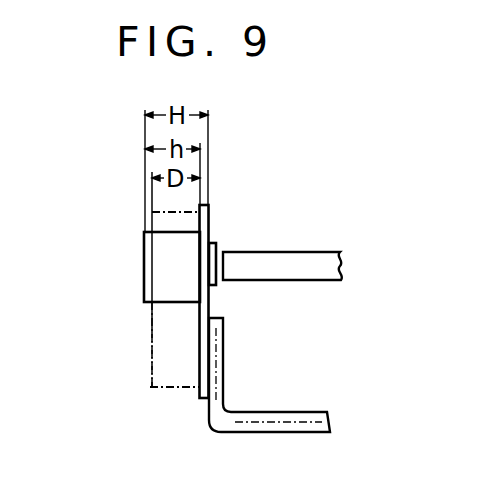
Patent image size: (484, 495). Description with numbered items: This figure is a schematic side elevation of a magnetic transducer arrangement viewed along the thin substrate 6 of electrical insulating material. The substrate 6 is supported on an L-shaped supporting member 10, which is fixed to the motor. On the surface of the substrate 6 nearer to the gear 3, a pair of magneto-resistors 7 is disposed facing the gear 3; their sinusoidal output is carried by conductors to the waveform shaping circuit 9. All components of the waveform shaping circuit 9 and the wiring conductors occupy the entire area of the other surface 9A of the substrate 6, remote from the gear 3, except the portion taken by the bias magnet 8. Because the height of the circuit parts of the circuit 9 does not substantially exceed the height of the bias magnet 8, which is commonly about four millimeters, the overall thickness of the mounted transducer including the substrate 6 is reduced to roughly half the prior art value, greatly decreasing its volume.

The gear 3 is at (296, 272).
The substrate 6 is at (199, 398).
The magneto-resistors 7 is at (217, 246).
The bias magnet 8 is at (160, 297).
The waveform shaping circuit 9 is at (163, 388).
The other surface of the substrate 9A is at (197, 352).
The L-shaped supporting member 10 is at (281, 416).